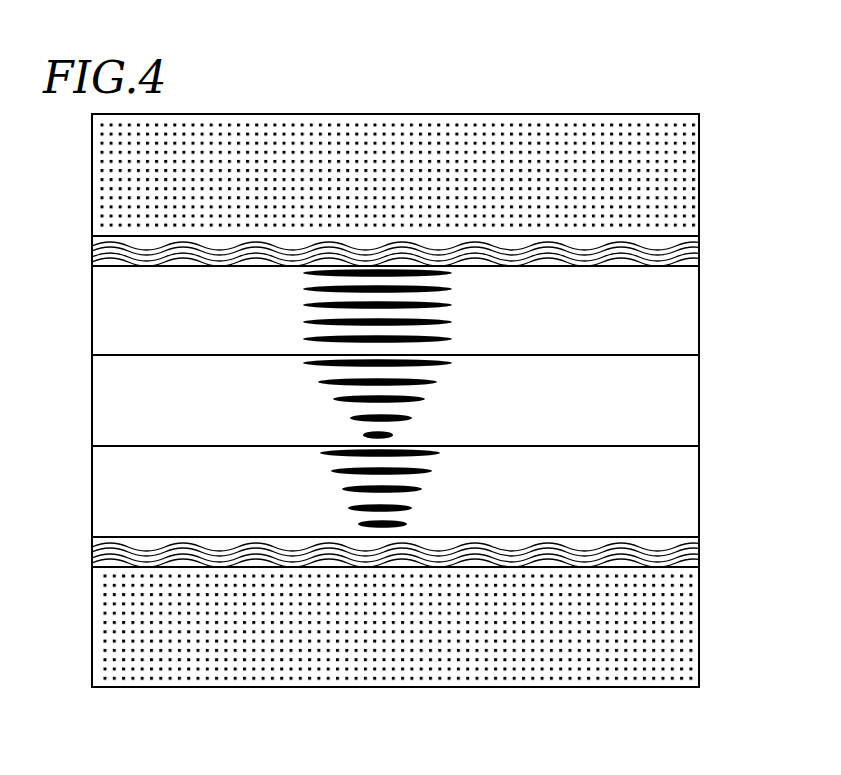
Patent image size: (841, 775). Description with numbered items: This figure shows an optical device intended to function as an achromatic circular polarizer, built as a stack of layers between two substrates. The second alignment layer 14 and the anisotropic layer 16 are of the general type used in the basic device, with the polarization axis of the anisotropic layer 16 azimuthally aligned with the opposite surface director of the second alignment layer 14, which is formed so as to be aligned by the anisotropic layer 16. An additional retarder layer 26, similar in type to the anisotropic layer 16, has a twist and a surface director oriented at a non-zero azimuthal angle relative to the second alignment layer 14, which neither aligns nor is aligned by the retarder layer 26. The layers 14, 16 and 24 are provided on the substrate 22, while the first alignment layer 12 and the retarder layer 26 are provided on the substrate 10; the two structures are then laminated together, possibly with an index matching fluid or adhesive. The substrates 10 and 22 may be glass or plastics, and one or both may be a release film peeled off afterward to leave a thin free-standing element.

The substrate 10 is at (683, 612).
The first alignment layer 12 is at (698, 545).
The second alignment layer 14 is at (673, 388).
The anisotropic layer 16 is at (670, 311).
The substrate 22 is at (673, 198).
The layer 24 is at (675, 247).
The additional retarder layer 26 is at (655, 483).